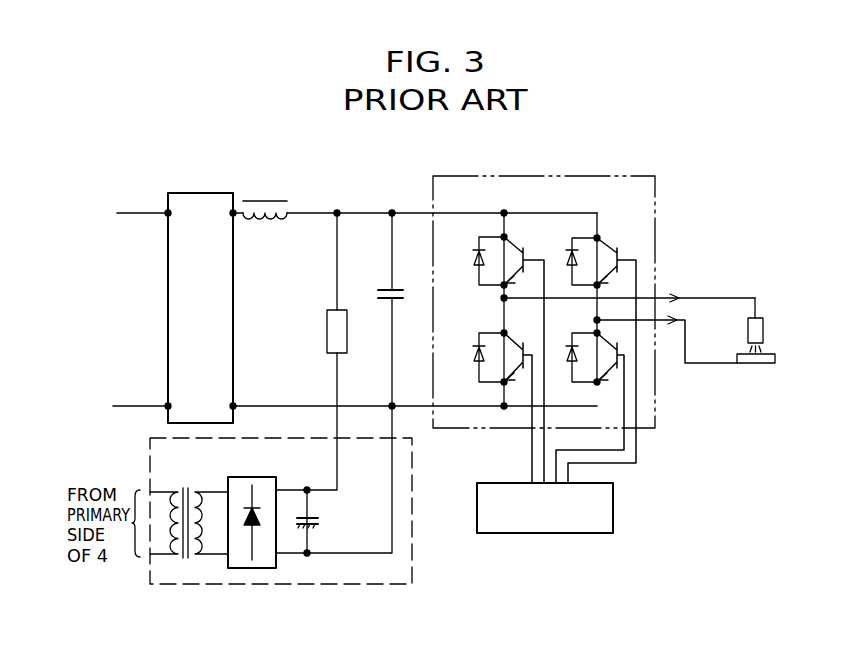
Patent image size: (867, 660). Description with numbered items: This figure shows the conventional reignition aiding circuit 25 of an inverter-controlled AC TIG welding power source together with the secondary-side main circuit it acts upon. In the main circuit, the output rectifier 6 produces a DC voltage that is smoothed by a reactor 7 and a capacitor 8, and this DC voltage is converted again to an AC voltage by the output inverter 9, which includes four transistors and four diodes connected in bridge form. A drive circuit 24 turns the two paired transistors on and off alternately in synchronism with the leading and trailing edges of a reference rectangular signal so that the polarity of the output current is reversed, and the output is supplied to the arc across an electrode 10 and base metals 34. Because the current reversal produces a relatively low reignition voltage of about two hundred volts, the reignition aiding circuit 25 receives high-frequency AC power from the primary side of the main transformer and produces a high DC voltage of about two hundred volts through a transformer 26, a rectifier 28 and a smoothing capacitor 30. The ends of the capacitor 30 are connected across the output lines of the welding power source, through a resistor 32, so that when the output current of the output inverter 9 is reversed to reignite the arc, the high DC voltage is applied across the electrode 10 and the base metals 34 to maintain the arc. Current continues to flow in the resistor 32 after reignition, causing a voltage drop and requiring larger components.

The output rectifier 6 is at (200, 193).
The reactor 7 is at (270, 200).
The capacitor 8 is at (380, 293).
The output inverter 9 is at (655, 185).
The output terminal 10 is at (755, 297).
The drive circuit 24 is at (613, 500).
The reignition aiding circuit 25 is at (336, 584).
The transformer 26 is at (185, 560).
The rectifier 28 is at (252, 570).
The smoothing capacitor 30 is at (320, 518).
The resistor 32 is at (327, 333).
The base metals 34 is at (775, 360).